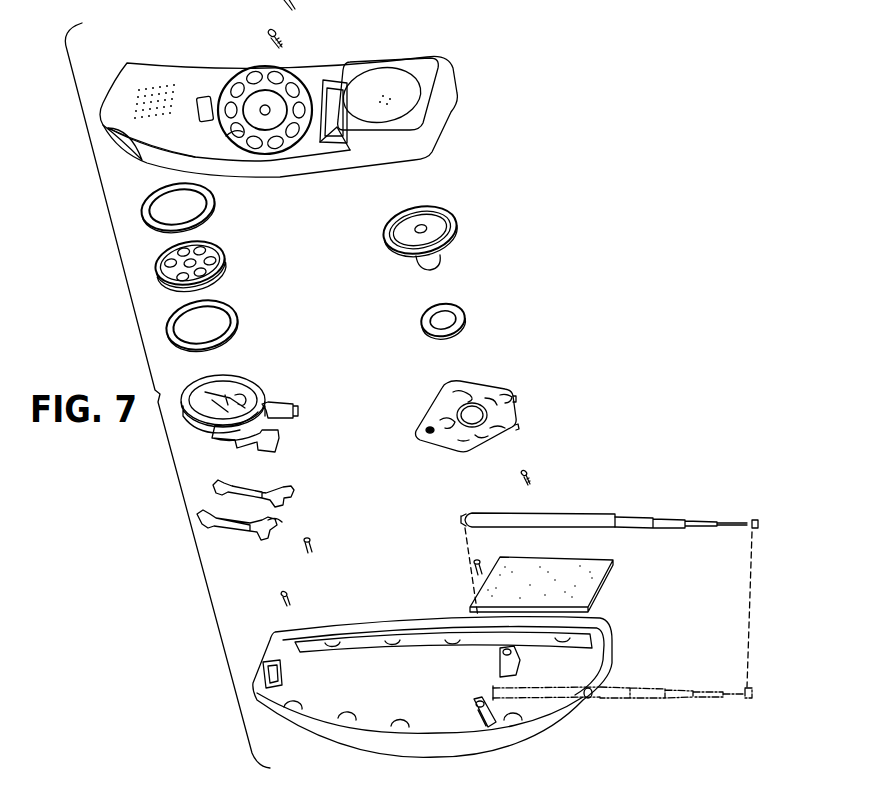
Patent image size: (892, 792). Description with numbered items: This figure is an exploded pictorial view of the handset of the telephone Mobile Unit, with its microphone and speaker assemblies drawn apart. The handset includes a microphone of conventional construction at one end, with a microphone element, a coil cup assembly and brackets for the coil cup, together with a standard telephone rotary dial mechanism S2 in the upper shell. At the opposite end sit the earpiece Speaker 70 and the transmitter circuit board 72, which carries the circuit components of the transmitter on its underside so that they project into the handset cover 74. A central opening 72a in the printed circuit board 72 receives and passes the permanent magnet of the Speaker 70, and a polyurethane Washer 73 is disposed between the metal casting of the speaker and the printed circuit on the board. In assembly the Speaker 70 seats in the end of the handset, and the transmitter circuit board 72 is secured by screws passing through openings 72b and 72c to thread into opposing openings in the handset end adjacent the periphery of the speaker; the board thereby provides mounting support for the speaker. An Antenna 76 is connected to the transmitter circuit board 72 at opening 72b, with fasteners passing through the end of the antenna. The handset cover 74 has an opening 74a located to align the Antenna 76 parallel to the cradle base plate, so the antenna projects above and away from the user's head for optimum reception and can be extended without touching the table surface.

The rotary dial mechanism S2 is at (290, 83).
The earpiece Speaker 70 is at (455, 218).
The polyurethane Washer 73 is at (460, 305).
The transmitter circuit board 72 is at (443, 390).
The central opening 72a is at (467, 402).
The opening 72b is at (428, 430).
The opening 72c is at (510, 400).
The Antenna 76 is at (565, 514).
The handset cover 74 is at (547, 733).
The opening 74a is at (600, 688).